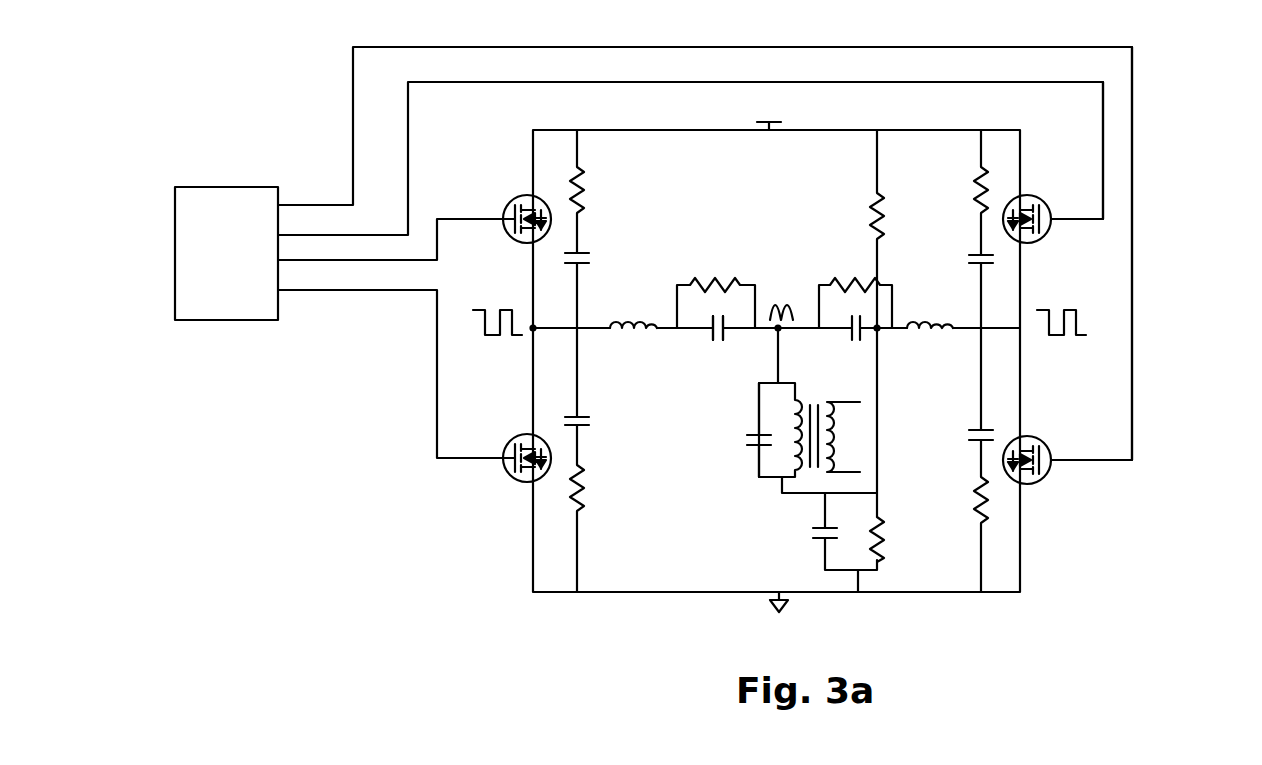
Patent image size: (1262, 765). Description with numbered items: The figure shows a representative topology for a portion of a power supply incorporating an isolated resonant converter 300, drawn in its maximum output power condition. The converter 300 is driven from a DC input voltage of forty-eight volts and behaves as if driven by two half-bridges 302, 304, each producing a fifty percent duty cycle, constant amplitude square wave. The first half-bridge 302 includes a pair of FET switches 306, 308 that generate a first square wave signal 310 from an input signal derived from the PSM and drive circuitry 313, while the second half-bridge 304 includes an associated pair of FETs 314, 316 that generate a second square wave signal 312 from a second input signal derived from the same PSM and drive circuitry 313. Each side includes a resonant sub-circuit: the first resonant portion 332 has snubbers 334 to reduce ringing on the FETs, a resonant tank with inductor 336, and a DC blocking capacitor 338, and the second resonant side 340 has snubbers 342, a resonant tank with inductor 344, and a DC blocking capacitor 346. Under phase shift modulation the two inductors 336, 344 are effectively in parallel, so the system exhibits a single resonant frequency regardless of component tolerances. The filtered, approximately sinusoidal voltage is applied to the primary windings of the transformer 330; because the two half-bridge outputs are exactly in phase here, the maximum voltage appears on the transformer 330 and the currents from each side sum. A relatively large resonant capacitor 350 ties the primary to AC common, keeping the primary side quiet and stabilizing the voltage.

The resonant converter 300 is at (392, 418).
The half-bridge 302 is at (318, 152).
The second half-bridge 304 is at (1184, 180).
The FET switch 306 is at (500, 212).
The FET switch 308 is at (508, 470).
The first square wave signal 310 is at (505, 343).
The second pulse drive signal 312 is at (1067, 343).
The PSM and drive circuitry 313 is at (222, 320).
The FET 314 is at (1052, 230).
The FET 316 is at (1052, 478).
The transformer 330 is at (782, 500).
The first resonant portion 332 is at (718, 231).
The snubbers 334 is at (614, 230).
The inductor 336 is at (655, 326).
The DC blocking capacitor 338 is at (712, 364).
The second resonant side 340 is at (806, 231).
The snubbers 342 is at (934, 231).
The inductor 344 is at (905, 348).
The DC blocking capacitor 346 is at (830, 350).
The resonant capacitor 350 is at (730, 443).